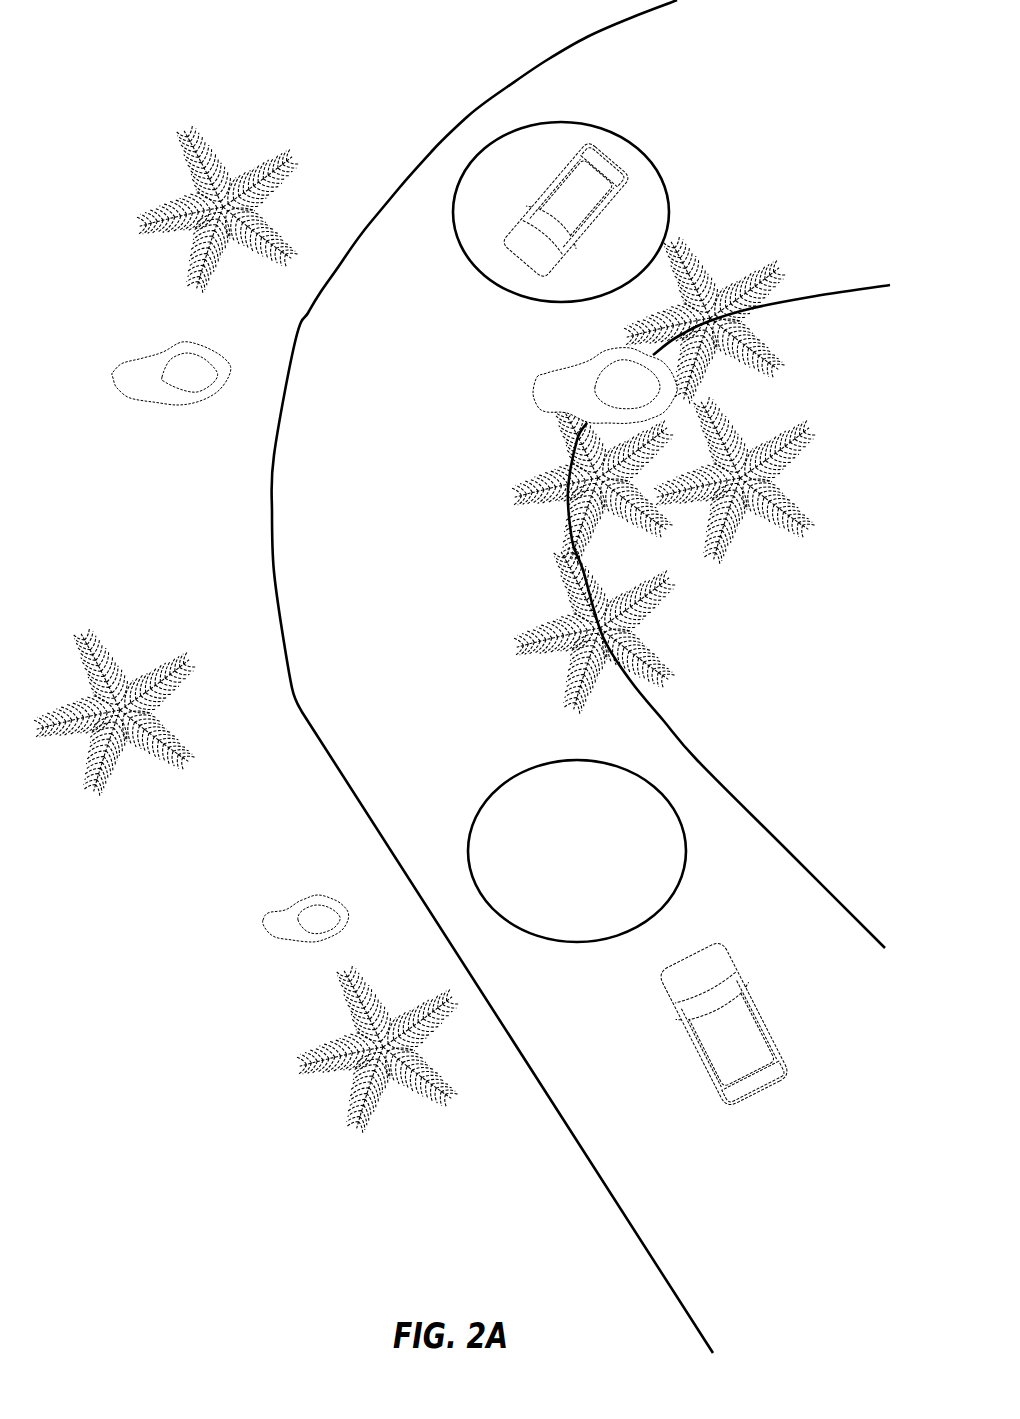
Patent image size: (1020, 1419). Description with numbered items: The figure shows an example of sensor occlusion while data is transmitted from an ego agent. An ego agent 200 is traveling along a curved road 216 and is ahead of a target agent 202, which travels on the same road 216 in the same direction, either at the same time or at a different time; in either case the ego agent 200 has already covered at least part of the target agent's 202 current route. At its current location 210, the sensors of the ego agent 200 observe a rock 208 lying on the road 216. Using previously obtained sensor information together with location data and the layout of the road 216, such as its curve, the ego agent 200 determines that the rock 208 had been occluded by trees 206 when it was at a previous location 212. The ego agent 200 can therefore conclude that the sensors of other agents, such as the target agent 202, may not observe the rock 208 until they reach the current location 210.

The ego agent 200 is at (565, 211).
The target agent 202 is at (724, 1024).
The trees 206 is at (658, 656).
The rock 208 is at (611, 397).
The current location 210 is at (643, 156).
The previous location 212 is at (660, 790).
The road 216 is at (296, 694).